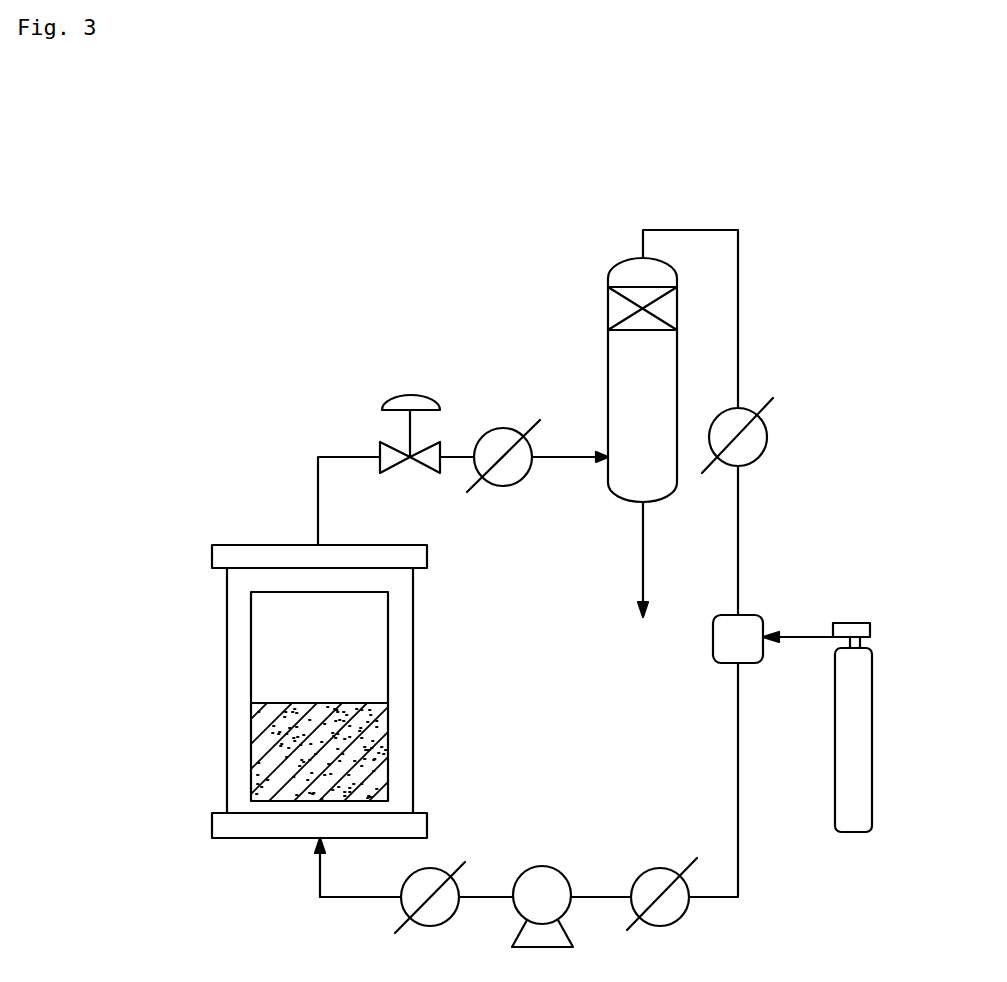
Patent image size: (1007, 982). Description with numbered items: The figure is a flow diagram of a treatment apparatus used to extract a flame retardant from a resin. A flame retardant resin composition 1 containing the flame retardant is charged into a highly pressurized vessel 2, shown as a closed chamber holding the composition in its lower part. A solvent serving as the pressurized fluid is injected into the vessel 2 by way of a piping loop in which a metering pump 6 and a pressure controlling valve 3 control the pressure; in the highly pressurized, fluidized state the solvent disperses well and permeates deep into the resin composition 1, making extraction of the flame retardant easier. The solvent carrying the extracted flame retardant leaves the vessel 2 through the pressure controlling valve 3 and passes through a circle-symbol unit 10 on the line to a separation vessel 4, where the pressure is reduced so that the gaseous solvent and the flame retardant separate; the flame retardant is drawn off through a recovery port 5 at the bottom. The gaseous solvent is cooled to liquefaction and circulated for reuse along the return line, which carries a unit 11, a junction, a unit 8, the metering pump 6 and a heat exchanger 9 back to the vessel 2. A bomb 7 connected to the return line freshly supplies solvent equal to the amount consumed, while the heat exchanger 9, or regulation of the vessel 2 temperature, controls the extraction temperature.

The flame retardant resin composition 1 is at (286, 771).
The highly pressurized vessel 2 is at (227, 607).
The pressure controlling valve 3 is at (390, 448).
The separation vessel 4 is at (632, 272).
The recovery port 5 is at (629, 560).
The metering pump 6 is at (541, 880).
The bomb 7 is at (862, 668).
The flow meter/valve 8 is at (665, 918).
The heat exchanger 9 is at (430, 918).
The flow meter/valve 10 is at (505, 480).
The flow meter/valve 11 is at (752, 444).